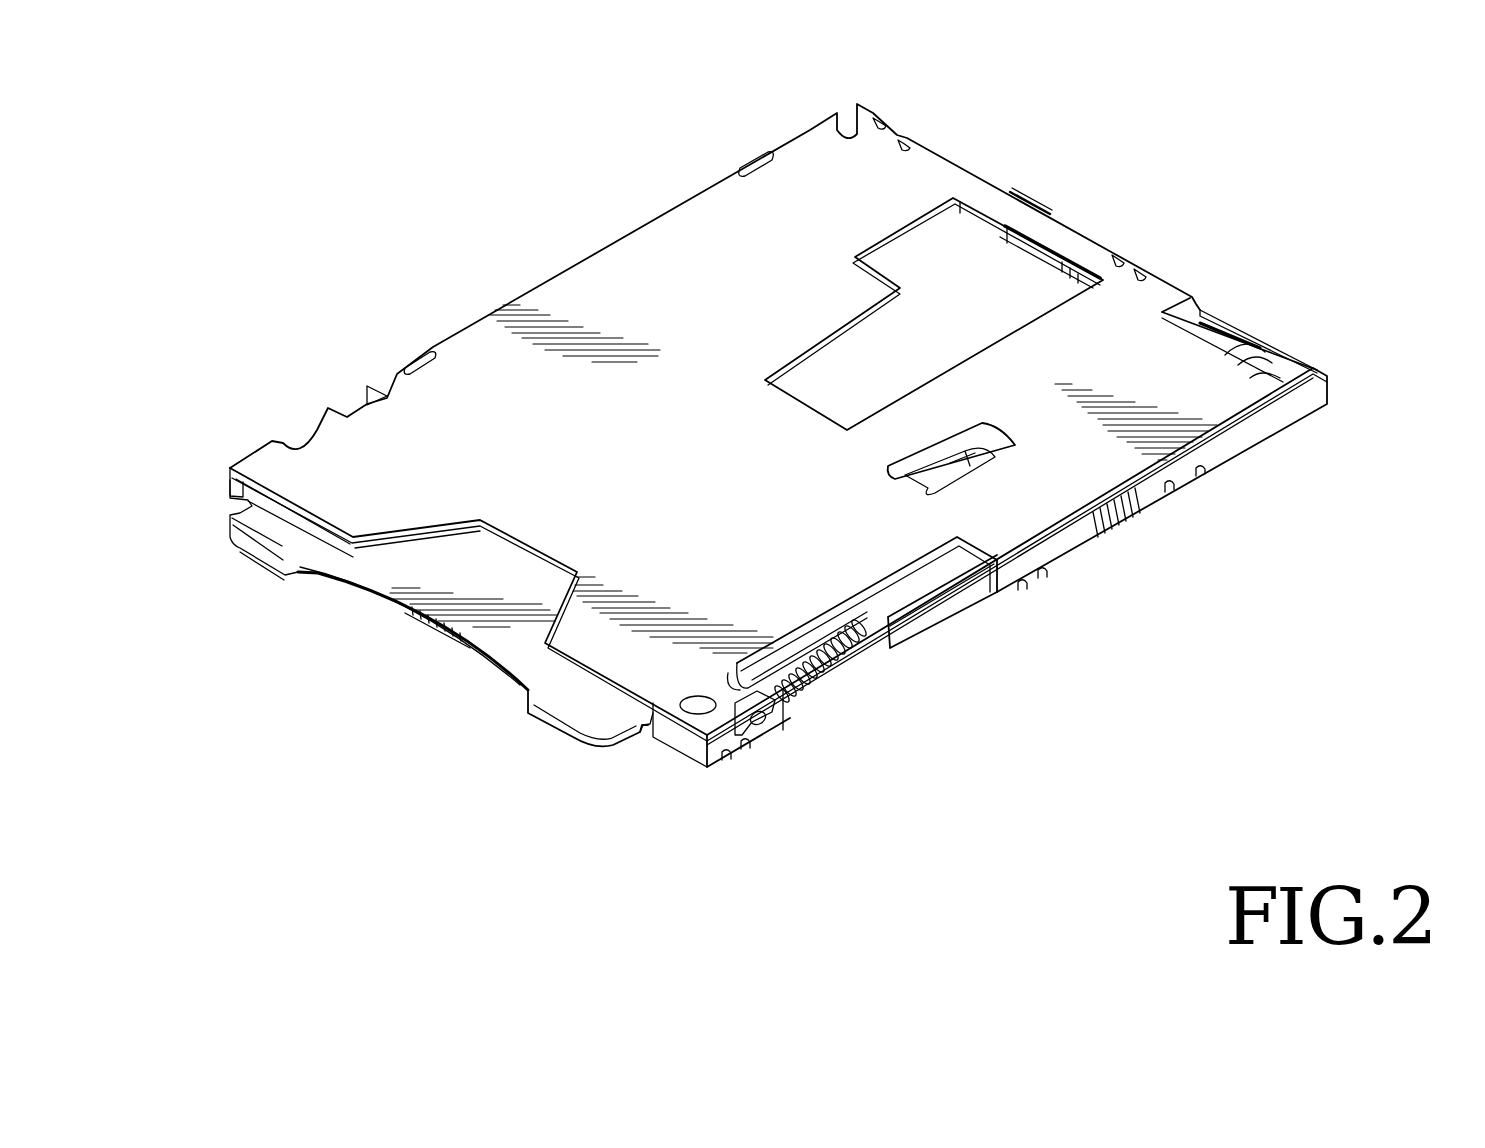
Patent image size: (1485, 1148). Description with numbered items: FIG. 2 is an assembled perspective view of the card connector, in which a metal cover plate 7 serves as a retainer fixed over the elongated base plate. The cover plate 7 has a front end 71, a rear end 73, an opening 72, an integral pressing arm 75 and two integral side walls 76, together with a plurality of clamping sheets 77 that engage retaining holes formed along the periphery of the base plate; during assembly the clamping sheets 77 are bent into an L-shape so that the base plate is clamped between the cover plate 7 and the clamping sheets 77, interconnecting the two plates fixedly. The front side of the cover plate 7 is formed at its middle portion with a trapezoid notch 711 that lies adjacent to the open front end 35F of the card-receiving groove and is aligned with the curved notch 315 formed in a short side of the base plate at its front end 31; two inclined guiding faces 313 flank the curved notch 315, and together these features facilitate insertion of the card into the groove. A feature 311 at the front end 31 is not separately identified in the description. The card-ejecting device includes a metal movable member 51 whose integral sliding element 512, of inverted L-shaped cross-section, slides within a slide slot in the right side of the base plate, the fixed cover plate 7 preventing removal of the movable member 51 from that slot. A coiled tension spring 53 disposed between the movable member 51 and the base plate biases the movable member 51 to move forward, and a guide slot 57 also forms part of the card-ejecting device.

The cover plate 7 is at (627, 296).
The rear end 73 is at (934, 173).
The opening 72 is at (1047, 248).
The guide slot 57 is at (1302, 312).
The side walls 76 is at (1255, 437).
The clamping sheets 77 is at (1196, 486).
The pressing arm 75 is at (955, 472).
The front end 71 is at (335, 513).
The trapezoid notch 711 is at (432, 533).
The open front end 35F is at (622, 720).
The front end 31 is at (420, 640).
The tab of tray 311 is at (275, 548).
The inclined guiding faces 313 is at (556, 718).
The curved notch 315 is at (468, 628).
The movable member 51 is at (874, 613).
The sliding element 512 is at (943, 612).
The coiled tension spring 53 is at (818, 682).